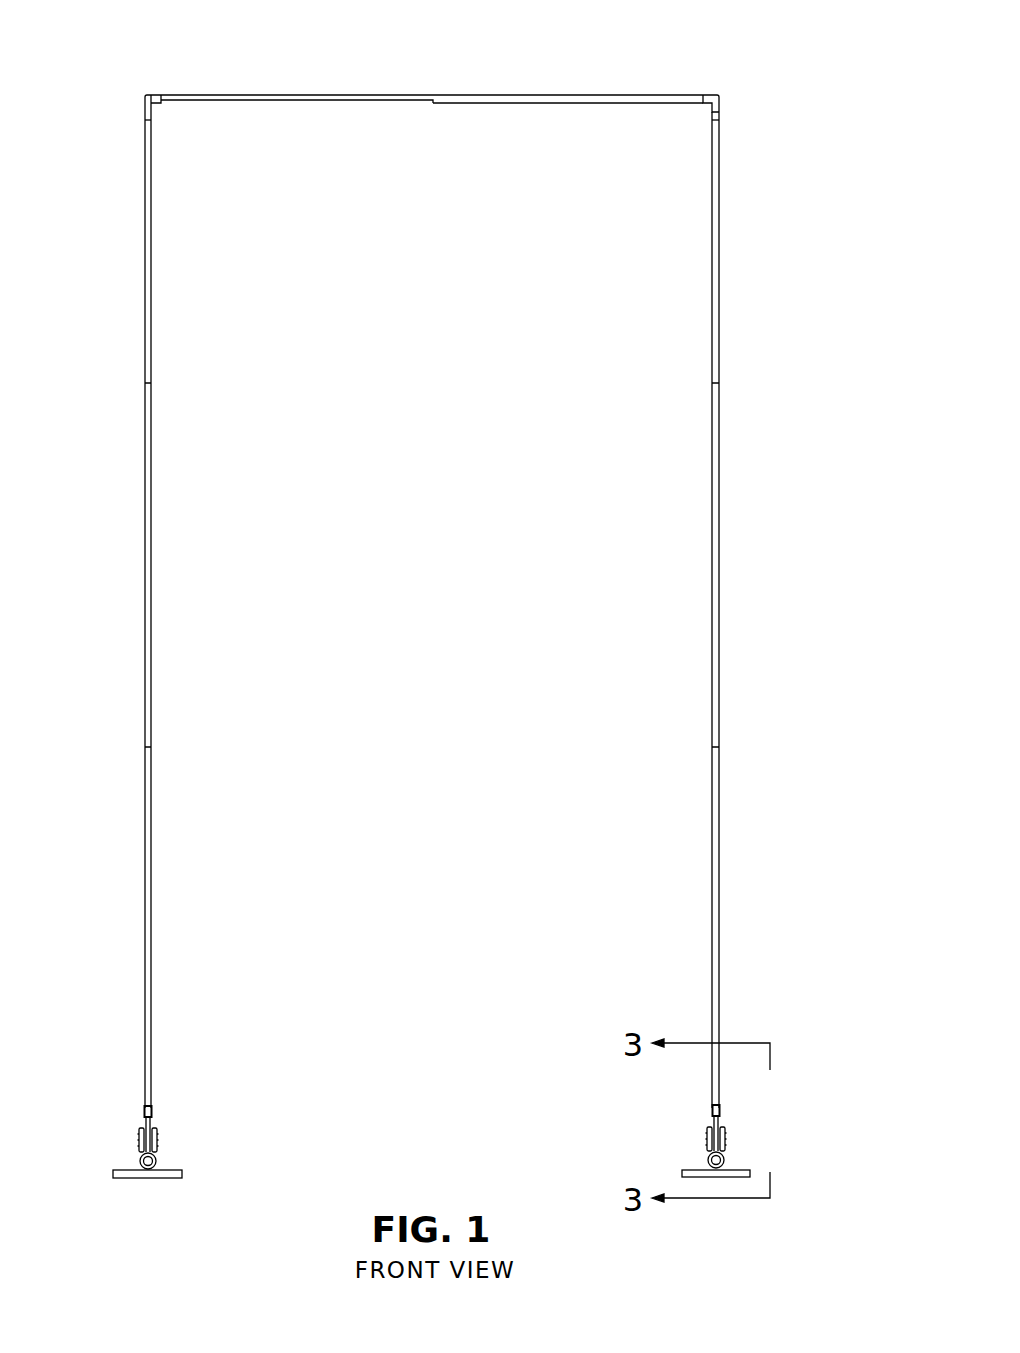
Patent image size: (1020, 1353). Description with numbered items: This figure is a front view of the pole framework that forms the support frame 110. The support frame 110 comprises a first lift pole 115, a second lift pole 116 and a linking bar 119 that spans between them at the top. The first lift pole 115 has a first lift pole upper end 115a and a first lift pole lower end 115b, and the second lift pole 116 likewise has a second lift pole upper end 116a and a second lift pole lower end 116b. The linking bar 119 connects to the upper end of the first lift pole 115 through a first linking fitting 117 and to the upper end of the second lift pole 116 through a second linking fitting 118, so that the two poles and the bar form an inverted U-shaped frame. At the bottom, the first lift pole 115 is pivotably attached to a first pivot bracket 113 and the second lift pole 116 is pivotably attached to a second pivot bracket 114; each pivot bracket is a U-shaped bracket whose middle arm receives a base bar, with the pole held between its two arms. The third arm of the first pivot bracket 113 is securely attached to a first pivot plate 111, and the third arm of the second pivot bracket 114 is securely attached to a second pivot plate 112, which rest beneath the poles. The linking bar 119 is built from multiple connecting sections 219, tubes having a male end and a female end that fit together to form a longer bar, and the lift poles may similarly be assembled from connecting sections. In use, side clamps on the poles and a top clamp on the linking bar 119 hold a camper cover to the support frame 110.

The support frame 110 is at (779, 928).
The first pivot plate 111 is at (183, 1174).
The second pivot plate 112 is at (688, 1168).
The first pivot bracket 113 is at (155, 1157).
The second pivot bracket 114 is at (710, 1158).
The first lift pole 115 is at (152, 677).
The first lift pole upper end 115a is at (145, 122).
The first lift pole lower end 115b is at (143, 1110).
The second lift pole 116 is at (715, 548).
The second lift pole upper end 116a is at (715, 123).
The second lift pole lower end 116b is at (717, 1108).
The first linking fitting 117 is at (152, 103).
The second linking fitting 118 is at (708, 105).
The linking bar 119 is at (378, 100).
The connecting sections 219 is at (403, 95).